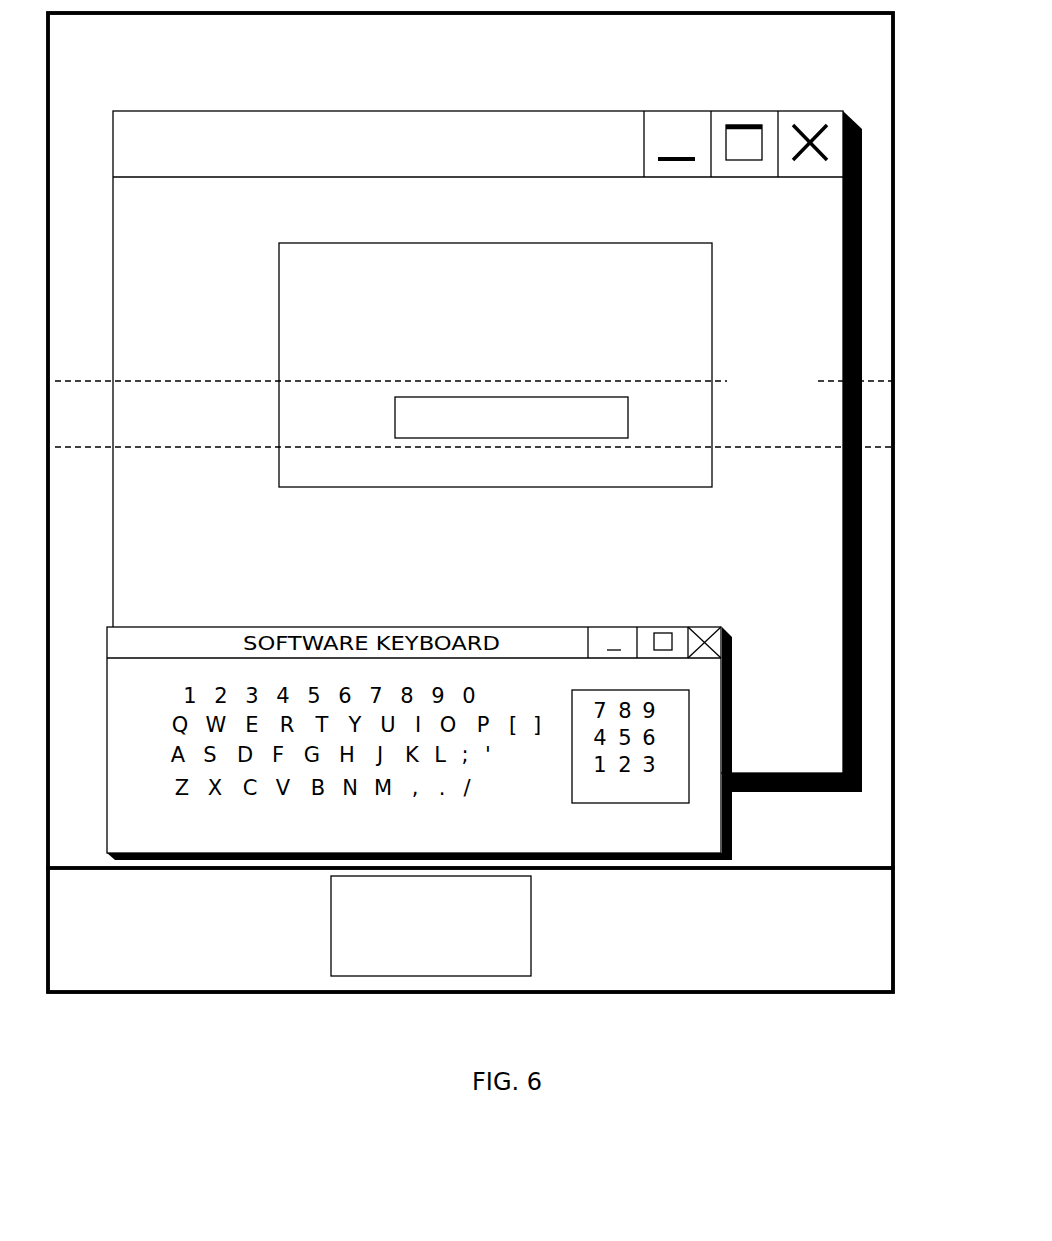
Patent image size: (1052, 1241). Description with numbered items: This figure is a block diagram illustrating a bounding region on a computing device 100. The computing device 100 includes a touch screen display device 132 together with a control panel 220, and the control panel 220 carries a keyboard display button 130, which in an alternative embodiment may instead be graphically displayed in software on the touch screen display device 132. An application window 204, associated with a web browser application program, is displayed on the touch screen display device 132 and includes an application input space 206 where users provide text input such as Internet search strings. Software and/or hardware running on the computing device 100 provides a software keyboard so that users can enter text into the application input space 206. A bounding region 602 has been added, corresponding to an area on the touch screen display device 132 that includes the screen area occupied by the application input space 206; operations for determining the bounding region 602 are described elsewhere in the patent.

The computing device 100 is at (716, 1010).
The touch screen display device 132 is at (259, 878).
The control panel 220 is at (210, 970).
The keyboard display button 130 is at (431, 926).
The application window 204 is at (359, 104).
The application input space 206 is at (385, 418).
The bounding region 602 is at (150, 462).